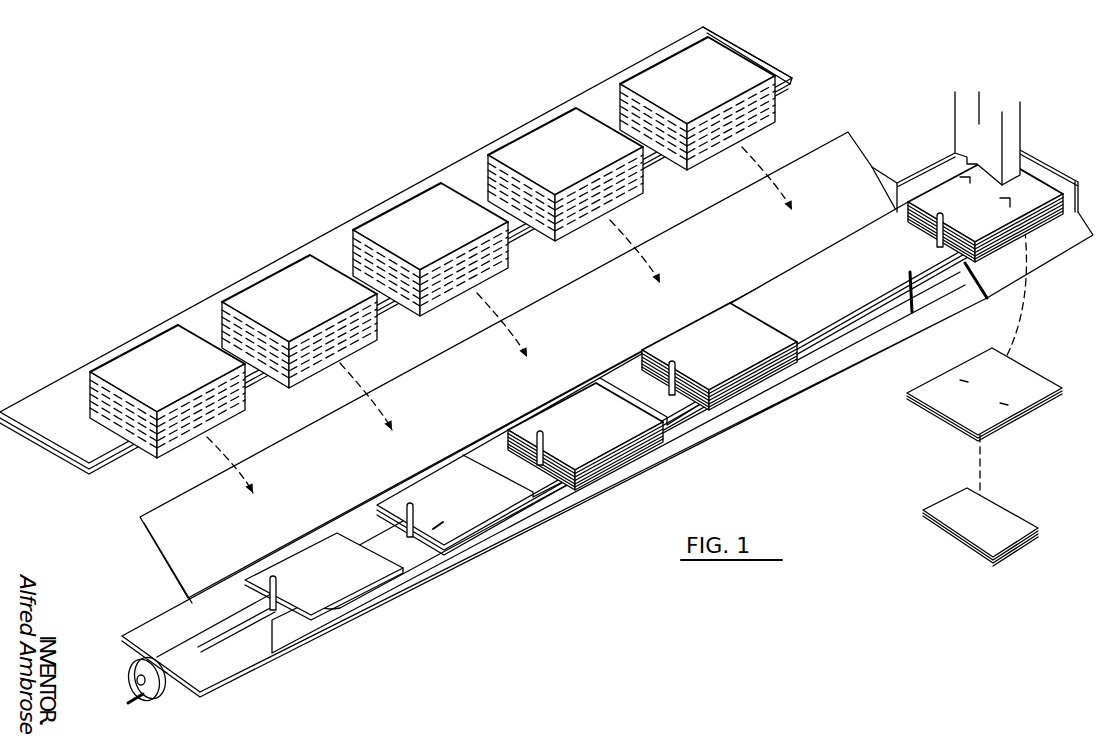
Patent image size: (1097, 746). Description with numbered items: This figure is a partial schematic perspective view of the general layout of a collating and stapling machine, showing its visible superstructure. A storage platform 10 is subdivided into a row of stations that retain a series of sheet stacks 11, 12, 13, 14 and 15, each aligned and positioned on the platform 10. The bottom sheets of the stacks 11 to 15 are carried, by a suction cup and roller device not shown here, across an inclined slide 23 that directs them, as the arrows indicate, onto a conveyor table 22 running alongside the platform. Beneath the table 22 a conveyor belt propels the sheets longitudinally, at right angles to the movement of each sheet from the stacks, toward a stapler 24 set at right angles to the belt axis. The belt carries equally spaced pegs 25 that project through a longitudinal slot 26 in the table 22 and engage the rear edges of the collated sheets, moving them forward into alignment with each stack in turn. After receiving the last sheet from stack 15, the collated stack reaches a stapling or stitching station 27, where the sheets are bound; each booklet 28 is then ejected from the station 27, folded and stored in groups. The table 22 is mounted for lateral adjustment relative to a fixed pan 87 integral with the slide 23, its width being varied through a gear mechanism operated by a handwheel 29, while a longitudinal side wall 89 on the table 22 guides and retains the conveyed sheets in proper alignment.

The storage platform 10 is at (327, 247).
The sheet stack 11 is at (158, 343).
The sheet stack 12 is at (272, 283).
The sheet stack 13 is at (392, 230).
The sheet stack 14 is at (522, 147).
The sheet stack 15 is at (658, 75).
The conveyor table 22 is at (690, 413).
The inclined slide 23 is at (440, 368).
The stapler 24 is at (957, 123).
The pegs 25 is at (280, 578).
The longitudinal slot 26 is at (212, 632).
The stapling or stitching station 27 is at (972, 270).
The booklet 28 is at (942, 383).
The handwheel 29 is at (156, 700).
The fixed pan 87 is at (155, 633).
The longitudinal side wall 89 is at (297, 632).